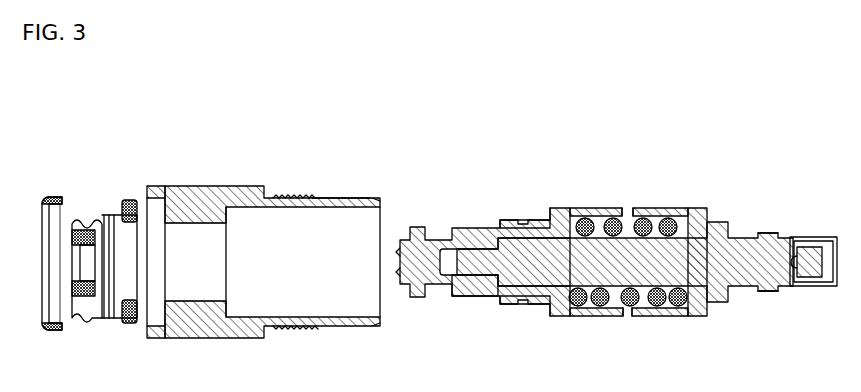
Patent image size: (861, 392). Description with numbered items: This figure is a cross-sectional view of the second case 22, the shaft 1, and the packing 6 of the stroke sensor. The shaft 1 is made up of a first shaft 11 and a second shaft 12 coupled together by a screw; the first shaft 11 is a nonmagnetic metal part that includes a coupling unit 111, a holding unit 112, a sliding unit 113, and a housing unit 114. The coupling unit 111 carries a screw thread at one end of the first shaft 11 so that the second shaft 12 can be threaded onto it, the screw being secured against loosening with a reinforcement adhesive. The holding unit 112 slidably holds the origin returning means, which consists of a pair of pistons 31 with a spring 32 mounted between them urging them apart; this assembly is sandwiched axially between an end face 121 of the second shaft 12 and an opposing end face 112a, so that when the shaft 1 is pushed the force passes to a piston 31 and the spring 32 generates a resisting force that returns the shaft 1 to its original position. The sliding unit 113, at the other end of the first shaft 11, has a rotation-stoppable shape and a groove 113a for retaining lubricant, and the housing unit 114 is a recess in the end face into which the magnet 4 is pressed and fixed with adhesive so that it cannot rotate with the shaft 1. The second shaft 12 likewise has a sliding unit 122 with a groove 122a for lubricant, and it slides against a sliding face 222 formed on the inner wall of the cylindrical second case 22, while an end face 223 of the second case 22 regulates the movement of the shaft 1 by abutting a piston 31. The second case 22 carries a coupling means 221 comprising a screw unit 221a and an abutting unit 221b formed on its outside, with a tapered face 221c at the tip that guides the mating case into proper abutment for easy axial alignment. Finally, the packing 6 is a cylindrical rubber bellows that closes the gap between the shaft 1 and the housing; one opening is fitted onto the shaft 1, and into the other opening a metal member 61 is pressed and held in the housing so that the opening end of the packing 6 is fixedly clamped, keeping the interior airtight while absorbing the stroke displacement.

The shaft 1 is at (616, 239).
The magnet 4 is at (813, 266).
The packing 6 is at (108, 215).
The metal member 61 is at (53, 196).
The first shaft 11 is at (628, 260).
The second shaft 12 is at (496, 261).
The second case 22 is at (278, 232).
The piston 31 is at (622, 210).
The spring 32 is at (630, 310).
The coupling unit 111 is at (467, 297).
The holding unit 112 is at (647, 256).
The end face 112a is at (697, 317).
The sliding unit 113 is at (800, 237).
The groove 113a is at (777, 291).
The housing unit 114 is at (810, 279).
The end face 121 is at (565, 213).
The sliding unit 122 is at (540, 220).
The groove 122a is at (527, 304).
The coupling means 221 is at (315, 218).
The screw unit 221a is at (300, 196).
The abutting unit 221b is at (352, 197).
The tapered face 221c is at (378, 199).
The sliding face 222 is at (190, 290).
The end face 223 is at (238, 305).